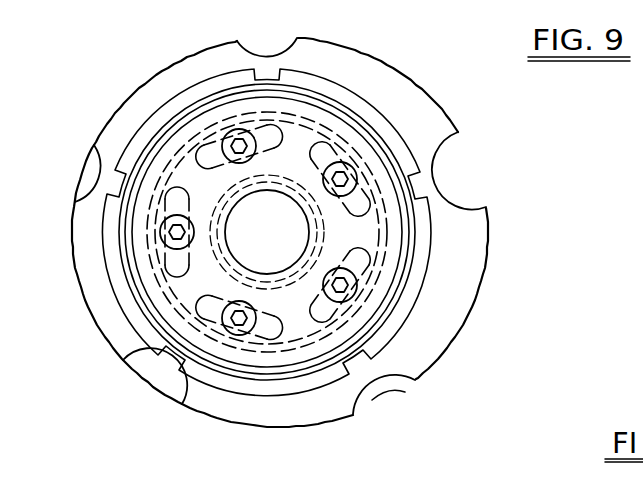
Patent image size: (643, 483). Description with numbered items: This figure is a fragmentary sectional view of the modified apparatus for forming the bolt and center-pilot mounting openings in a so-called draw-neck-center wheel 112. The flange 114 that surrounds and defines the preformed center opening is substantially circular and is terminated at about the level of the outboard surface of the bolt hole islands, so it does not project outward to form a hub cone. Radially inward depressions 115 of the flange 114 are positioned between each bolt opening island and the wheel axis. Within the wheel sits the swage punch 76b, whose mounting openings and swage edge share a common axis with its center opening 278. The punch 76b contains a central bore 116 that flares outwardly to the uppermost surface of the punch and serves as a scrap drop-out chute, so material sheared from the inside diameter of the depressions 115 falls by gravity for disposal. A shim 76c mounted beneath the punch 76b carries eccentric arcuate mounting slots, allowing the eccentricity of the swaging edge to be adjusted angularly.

The draw-neck-center wheel 112 is at (455, 103).
The flange 114 is at (362, 102).
The radially inward depressions 115 is at (408, 188).
The central bore 116 is at (182, 283).
The swage punch 76b is at (368, 262).
The shim 76c is at (262, 350).
The center opening 278 is at (308, 232).